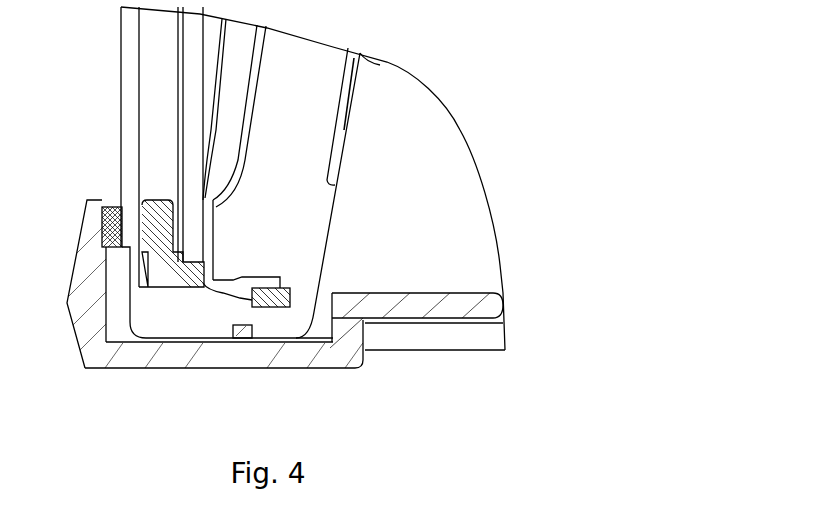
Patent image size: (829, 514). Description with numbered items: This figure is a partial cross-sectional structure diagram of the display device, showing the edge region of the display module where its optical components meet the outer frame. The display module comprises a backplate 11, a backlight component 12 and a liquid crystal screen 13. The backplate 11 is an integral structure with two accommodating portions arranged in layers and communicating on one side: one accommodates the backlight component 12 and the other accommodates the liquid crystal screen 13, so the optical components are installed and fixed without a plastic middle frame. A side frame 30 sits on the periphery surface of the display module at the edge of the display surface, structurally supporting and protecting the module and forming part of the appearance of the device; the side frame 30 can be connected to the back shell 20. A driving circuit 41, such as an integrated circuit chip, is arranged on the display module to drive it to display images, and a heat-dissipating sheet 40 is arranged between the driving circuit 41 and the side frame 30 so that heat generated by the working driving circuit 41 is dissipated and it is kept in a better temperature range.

The backplate 11 is at (248, 150).
The backlight component 12 is at (192, 107).
The liquid crystal screen 13 is at (131, 125).
The back shell 20 is at (408, 340).
The side frame 30 is at (76, 250).
The heat-dissipating sheet 40 is at (285, 369).
The driving circuit 41 is at (240, 342).